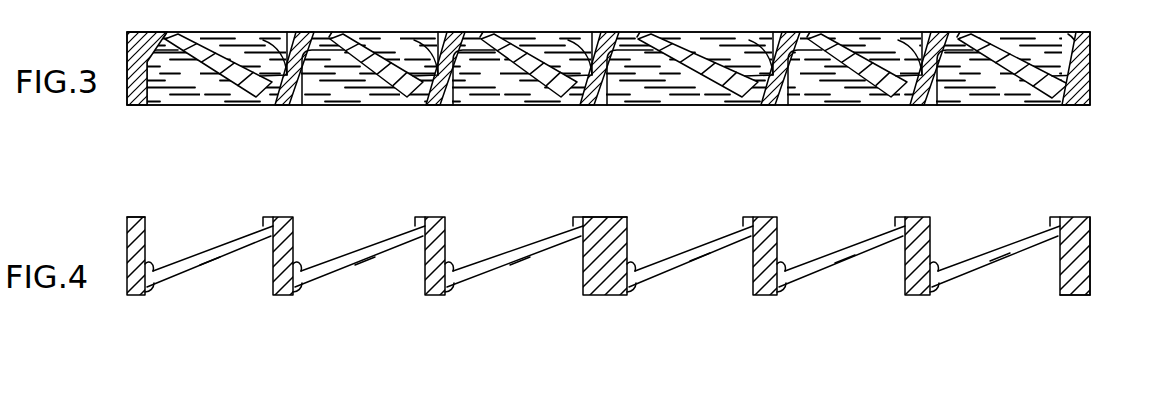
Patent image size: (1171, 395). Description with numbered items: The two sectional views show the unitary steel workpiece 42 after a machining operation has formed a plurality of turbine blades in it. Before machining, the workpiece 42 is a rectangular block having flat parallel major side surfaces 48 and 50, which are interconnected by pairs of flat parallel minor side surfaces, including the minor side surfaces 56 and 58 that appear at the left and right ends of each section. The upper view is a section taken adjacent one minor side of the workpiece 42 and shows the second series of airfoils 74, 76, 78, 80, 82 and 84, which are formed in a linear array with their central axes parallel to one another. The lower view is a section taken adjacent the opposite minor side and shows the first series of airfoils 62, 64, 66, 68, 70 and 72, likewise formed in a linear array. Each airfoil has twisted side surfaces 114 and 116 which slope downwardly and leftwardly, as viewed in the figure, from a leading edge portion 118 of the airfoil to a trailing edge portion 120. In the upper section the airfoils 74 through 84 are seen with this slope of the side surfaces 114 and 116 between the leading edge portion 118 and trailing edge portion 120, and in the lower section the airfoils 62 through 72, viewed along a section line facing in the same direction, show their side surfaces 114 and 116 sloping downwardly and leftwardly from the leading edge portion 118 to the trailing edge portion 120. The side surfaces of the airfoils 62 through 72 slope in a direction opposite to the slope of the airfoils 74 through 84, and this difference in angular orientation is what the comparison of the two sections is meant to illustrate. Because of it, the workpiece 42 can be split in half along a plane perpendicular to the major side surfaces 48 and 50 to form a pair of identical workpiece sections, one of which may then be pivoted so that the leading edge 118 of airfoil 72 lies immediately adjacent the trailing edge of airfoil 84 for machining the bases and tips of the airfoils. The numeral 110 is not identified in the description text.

In FIG. 3, the workpiece 42 is at (1100, 106).
In FIG. 4, the workpiece 42 is at (1095, 213).
In FIG. 3, the major side surface 48 is at (1082, 32).
In FIG. 4, the major side surface 48 is at (138, 216).
In FIG. 3, the major side surface 50 is at (1012, 107).
In FIG. 4, the major side surface 50 is at (1068, 296).
In FIG. 3, the minor side surface 56 is at (127, 56).
In FIG. 4, the minor side surface 56 is at (127, 233).
In FIG. 3, the minor side surface 58 is at (1089, 81).
In FIG. 4, the minor side surface 58 is at (1091, 266).
In FIG. 4, the airfoil 62 is at (218, 232).
In FIG. 4, the airfoil 64 is at (363, 240).
In FIG. 4, the airfoil 66 is at (520, 240).
In FIG. 4, the airfoil 68 is at (685, 242).
In FIG. 4, the airfoil 70 is at (827, 242).
In FIG. 4, the airfoil 72 is at (975, 242).
In FIG. 3, the airfoil 74 is at (245, 55).
In FIG. 3, the airfoil 76 is at (396, 55).
In FIG. 3, the airfoil 78 is at (550, 55).
In FIG. 3, the airfoil 80 is at (731, 55).
In FIG. 3, the airfoil 82 is at (879, 60).
In FIG. 3, the airfoil 84 is at (1023, 55).
In FIG. 3, the upright post 110 is at (131, 105).
In FIG. 4, the upright post 110 is at (128, 296).
In FIG. 3, the twisted side surface 114 is at (201, 85).
In FIG. 4, the twisted side surface 114 is at (211, 262).
In FIG. 3, the twisted side surface 116 is at (285, 40).
In FIG. 4, the twisted side surface 116 is at (200, 258).
In FIG. 3, the leading edge portion 118 is at (167, 31).
In FIG. 4, the leading edge portion 118 is at (268, 216).
In FIG. 3, the trailing edge portion 120 is at (253, 101).
In FIG. 4, the trailing edge portion 120 is at (153, 286).